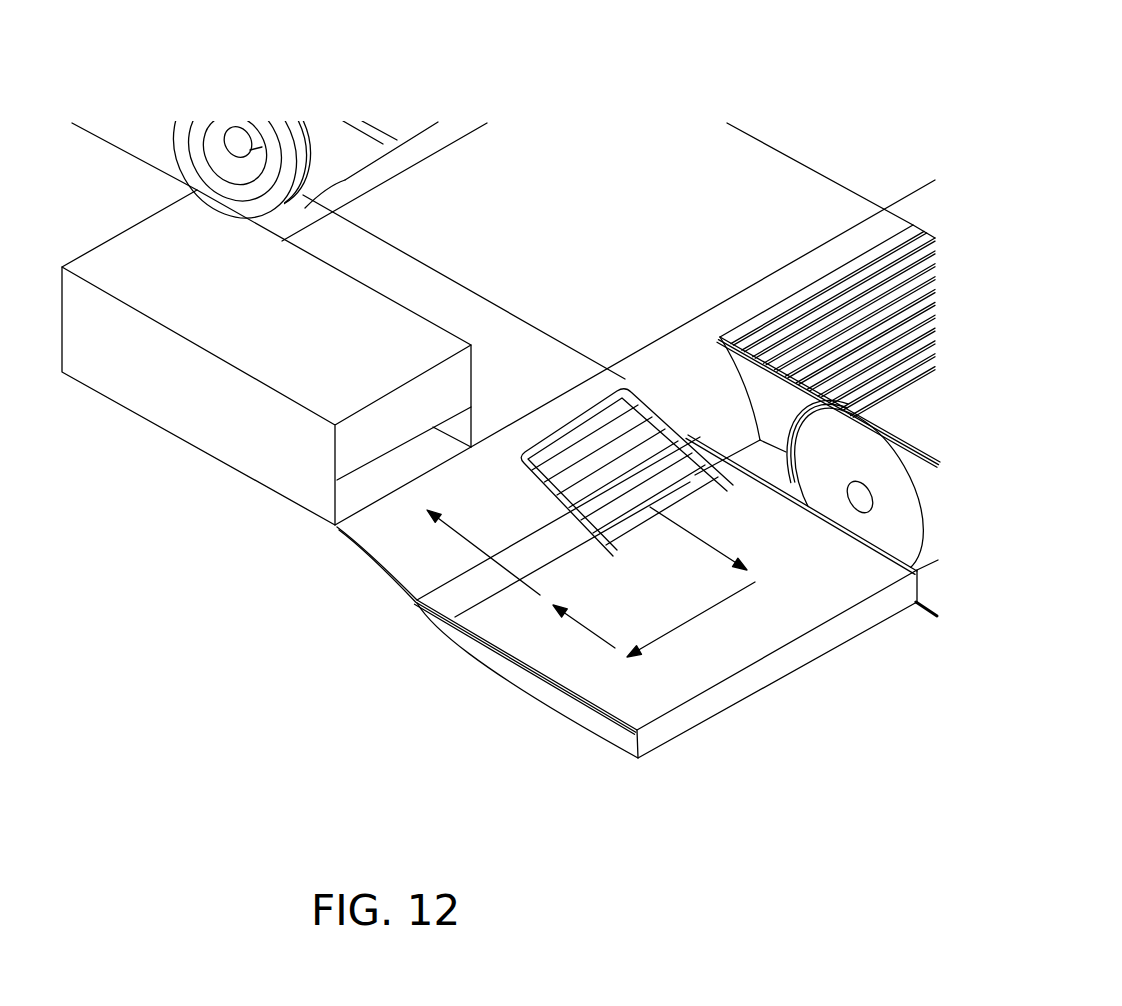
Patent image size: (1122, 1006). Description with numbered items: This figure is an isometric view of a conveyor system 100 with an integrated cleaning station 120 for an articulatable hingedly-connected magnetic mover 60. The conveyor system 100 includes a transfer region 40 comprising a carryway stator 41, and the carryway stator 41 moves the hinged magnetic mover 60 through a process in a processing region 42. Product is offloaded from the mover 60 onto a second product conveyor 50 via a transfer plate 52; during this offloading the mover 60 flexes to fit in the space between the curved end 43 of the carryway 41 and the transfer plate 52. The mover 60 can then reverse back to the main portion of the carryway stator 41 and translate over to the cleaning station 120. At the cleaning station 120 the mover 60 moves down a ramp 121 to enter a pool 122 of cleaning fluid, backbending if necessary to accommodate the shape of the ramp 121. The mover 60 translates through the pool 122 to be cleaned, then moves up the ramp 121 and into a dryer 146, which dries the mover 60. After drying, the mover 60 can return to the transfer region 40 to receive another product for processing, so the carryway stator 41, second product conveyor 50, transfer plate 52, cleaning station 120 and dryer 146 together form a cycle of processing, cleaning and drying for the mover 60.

The conveyor system 100 is at (590, 66).
The transfer region 40 is at (492, 150).
The carryway stator 41 is at (569, 215).
The processing region 42 is at (806, 125).
The curved end 43 is at (711, 395).
The second product conveyor 50 is at (924, 432).
The transfer plate 52 is at (792, 414).
The hinged magnetic mover 60 is at (623, 393).
The cleaning station 120 is at (406, 612).
The ramp 121 is at (521, 504).
The pool 122 is at (863, 587).
The dryer 146 is at (218, 407).